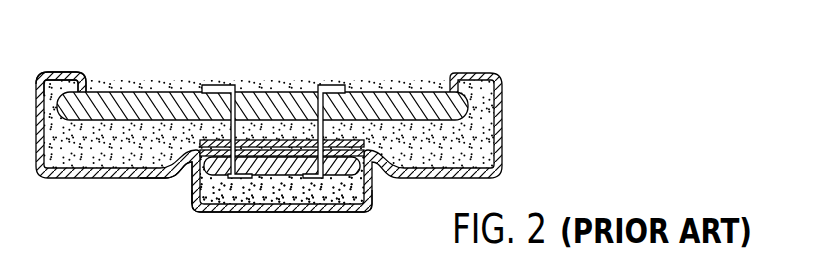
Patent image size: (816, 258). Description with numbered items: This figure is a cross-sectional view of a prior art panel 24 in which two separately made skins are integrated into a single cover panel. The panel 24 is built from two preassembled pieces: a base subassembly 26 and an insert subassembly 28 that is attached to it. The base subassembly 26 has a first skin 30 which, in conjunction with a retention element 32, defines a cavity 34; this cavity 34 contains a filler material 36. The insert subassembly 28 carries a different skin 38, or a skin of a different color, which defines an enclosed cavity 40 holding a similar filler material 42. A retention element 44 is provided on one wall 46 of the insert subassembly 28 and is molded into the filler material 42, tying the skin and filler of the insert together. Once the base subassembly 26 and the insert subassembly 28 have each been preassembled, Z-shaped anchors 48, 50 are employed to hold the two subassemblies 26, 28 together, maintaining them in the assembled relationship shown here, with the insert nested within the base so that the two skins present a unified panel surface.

The prior art panel 24 is at (310, 131).
The base subassembly 26 is at (472, 73).
The insert subassembly 28 is at (193, 183).
The first skin 30 is at (60, 73).
The retention element 32 is at (385, 100).
The cavity 34 is at (98, 142).
The filler material 36 is at (450, 156).
The different skin 38 is at (323, 209).
The enclosed cavity 40 is at (230, 190).
The filler material 42 is at (352, 188).
The retention element 44 is at (287, 152).
The wall 46 is at (255, 140).
The Z-shaped anchor 48 is at (213, 85).
The Z-shaped anchor 50 is at (336, 85).